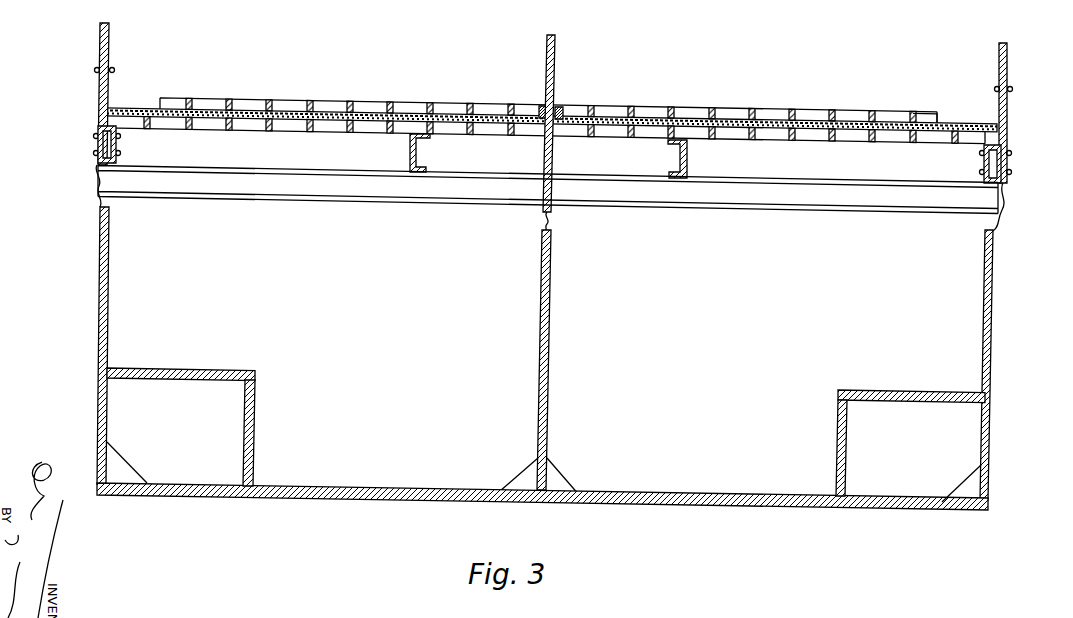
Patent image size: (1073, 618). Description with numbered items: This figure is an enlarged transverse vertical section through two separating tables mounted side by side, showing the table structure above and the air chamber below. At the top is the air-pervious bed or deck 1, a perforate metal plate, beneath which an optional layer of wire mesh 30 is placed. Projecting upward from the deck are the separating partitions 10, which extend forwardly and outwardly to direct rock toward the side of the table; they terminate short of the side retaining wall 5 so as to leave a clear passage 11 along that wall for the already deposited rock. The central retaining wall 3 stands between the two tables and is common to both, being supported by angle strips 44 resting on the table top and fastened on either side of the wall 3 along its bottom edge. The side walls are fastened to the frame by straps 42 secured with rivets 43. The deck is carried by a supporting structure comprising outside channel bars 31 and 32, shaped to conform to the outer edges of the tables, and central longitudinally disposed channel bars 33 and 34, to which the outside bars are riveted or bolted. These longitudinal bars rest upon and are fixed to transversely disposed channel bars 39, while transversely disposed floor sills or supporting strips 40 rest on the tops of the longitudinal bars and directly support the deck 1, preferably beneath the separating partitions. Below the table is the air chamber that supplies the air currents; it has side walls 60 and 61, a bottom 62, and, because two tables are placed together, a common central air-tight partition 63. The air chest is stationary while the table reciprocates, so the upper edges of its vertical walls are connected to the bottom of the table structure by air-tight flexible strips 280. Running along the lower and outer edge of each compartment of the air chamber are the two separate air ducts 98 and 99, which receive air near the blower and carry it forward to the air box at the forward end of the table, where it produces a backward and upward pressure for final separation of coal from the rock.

The bed or deck 1 is at (377, 106).
The retaining wall 3 is at (556, 49).
The side retaining wall 5 is at (110, 38).
The separating partitions 10 is at (457, 106).
The clear passage 11 is at (130, 100).
The layer of wire mesh 30 is at (293, 121).
The outside channel bar 31 is at (118, 151).
The outside channel bar 32 is at (986, 165).
The central longitudinally disposed channel bar 33 is at (418, 153).
The central longitudinally disposed channel bar 34 is at (680, 161).
The transversely disposed channel bars 39 is at (441, 190).
The floor sills or supporting strips 40 is at (277, 124).
The straps 42 is at (97, 110).
The rivets 43 is at (95, 70).
The angle strips 44 is at (540, 107).
The side wall of air chamber 60 is at (100, 289).
The side wall of air chamber 61 is at (993, 287).
The bottom of air chamber 62 is at (657, 503).
The central air-tight partition 63 is at (552, 322).
The air duct 98 is at (897, 413).
The air duct 99 is at (183, 403).
The flexible strips 280 is at (94, 183).